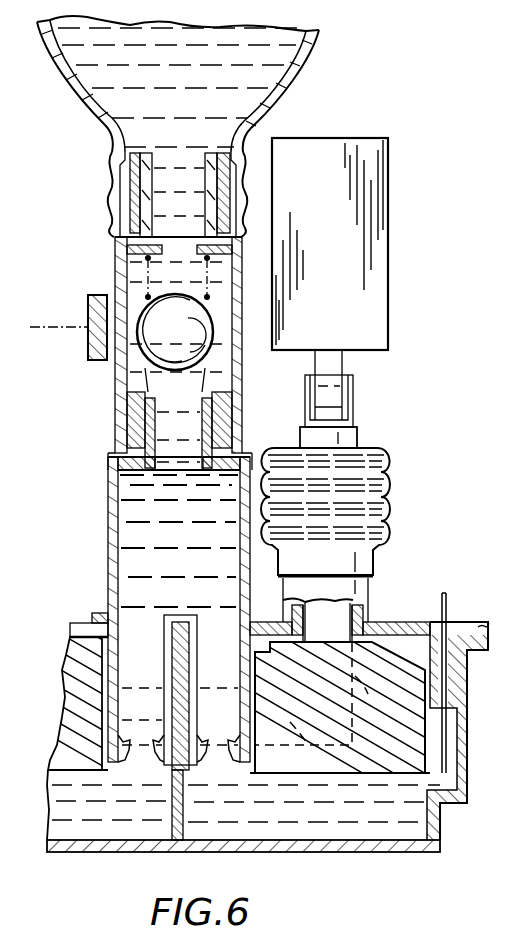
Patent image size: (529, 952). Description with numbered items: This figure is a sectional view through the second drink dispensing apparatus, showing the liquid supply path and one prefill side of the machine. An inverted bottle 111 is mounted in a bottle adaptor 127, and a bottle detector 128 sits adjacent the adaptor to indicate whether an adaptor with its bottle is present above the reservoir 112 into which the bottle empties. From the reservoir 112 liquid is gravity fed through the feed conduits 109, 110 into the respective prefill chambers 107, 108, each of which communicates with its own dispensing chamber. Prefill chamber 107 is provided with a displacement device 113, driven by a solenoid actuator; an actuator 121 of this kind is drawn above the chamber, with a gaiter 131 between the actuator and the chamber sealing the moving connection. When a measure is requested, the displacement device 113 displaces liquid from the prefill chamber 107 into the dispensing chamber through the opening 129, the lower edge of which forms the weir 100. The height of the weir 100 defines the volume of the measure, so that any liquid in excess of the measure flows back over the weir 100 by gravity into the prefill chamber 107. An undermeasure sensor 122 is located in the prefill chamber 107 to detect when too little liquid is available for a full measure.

The weir 100 is at (265, 717).
The prefill chamber 107 is at (285, 832).
The prefill chamber 108 is at (140, 832).
The feed conduit 109 is at (233, 681).
The feed conduit 110 is at (156, 681).
The bottle 111 is at (285, 97).
The reservoir 112 is at (128, 538).
The displacement device 113 is at (390, 672).
The actuator 121 is at (357, 238).
The undermeasure sensor 122 is at (447, 603).
The bottle adaptor 127 is at (237, 372).
The bottle detector 128 is at (97, 362).
The opening 129 is at (321, 694).
The gaiter 131 is at (375, 533).